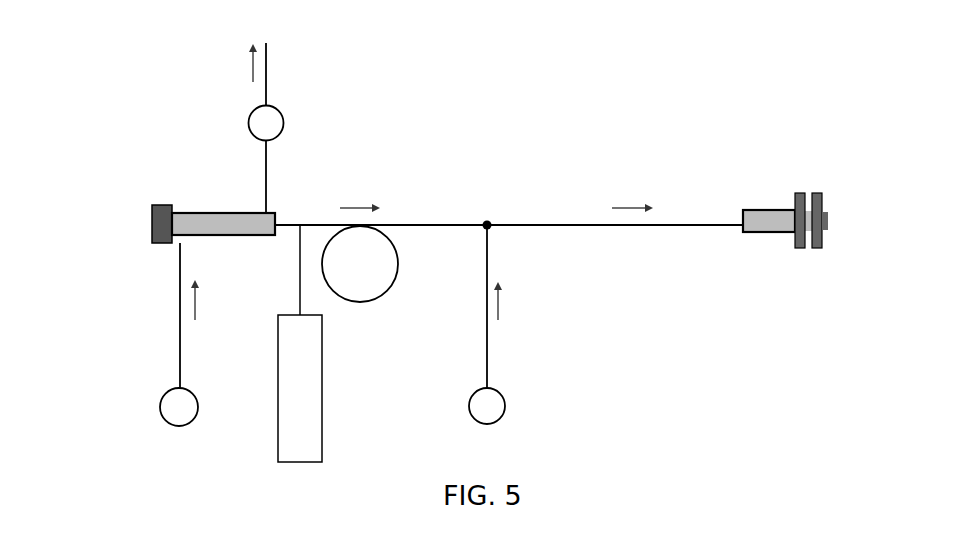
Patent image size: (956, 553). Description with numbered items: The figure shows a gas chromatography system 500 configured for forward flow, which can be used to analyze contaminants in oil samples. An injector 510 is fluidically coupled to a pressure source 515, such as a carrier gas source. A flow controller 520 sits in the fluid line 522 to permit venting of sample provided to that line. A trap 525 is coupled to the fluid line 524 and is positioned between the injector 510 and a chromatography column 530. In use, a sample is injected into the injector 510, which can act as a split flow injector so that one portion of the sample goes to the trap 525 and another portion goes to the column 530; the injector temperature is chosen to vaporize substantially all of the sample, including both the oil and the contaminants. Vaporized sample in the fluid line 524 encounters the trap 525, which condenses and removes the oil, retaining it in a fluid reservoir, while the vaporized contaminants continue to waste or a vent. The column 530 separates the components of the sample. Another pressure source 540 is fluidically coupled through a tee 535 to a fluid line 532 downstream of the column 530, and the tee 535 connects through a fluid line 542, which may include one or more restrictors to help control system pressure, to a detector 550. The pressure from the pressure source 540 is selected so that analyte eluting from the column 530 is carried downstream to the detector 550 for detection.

The system 500 is at (513, 138).
The injector 510 is at (207, 227).
The pressure source 515 is at (165, 392).
The flow controller 520 is at (275, 127).
The fluid line 522 is at (266, 182).
The fluid line 524 is at (283, 227).
The trap 525 is at (285, 455).
The chromatography column 530 is at (358, 303).
The fluid line 532 is at (410, 226).
The tee 535 is at (487, 221).
The pressure source 540 is at (502, 407).
The fluid line 542 is at (615, 227).
The detector 550 is at (770, 210).